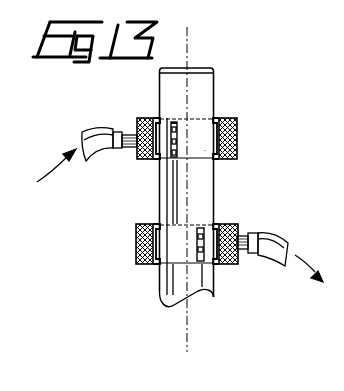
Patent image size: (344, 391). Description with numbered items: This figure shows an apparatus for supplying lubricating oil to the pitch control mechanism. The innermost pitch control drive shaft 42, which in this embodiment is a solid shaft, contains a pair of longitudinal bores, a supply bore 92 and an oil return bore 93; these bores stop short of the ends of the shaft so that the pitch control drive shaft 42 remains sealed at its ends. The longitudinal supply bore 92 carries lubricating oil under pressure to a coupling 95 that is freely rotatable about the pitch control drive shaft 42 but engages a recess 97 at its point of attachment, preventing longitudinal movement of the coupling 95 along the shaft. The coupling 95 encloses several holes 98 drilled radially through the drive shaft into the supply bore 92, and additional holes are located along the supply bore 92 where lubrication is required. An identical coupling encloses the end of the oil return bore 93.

The pitch control drive shaft 42 is at (203, 87).
The longitudinal supply bore 92 is at (168, 178).
The oil return bore 93 is at (202, 287).
The coupling 95 is at (237, 118).
The recess 97 is at (205, 150).
The holes 98 is at (181, 121).